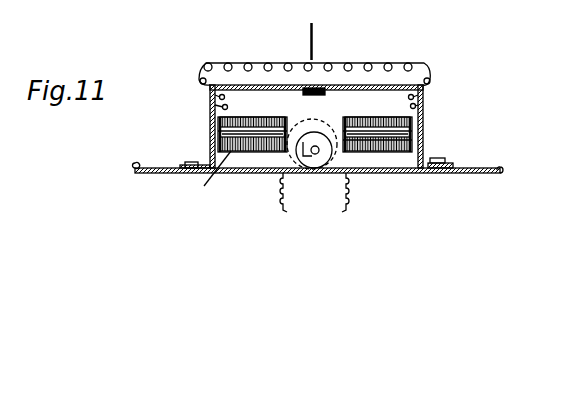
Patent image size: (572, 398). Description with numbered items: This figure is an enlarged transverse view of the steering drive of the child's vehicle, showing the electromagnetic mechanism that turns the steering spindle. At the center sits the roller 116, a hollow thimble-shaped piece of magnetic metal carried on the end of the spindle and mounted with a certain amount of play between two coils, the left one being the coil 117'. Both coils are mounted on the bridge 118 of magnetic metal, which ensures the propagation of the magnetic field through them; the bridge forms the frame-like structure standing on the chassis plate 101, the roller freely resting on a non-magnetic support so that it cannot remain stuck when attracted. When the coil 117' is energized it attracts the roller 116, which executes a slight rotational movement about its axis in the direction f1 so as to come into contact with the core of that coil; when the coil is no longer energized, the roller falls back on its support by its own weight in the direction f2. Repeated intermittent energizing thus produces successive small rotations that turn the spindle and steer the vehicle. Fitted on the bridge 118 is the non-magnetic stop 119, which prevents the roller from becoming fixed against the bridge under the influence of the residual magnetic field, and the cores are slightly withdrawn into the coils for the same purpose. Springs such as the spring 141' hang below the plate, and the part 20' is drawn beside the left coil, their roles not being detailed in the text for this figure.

The base plate 101 is at (483, 168).
The roller 116 is at (332, 145).
The coil 117' is at (225, 134).
The bridge 118 is at (424, 100).
The non-magnetic stop 119 is at (317, 86).
The left spring 141' is at (262, 193).
The lever 20' is at (203, 176).
The direction f1 is at (309, 176).
The direction f2 is at (312, 134).